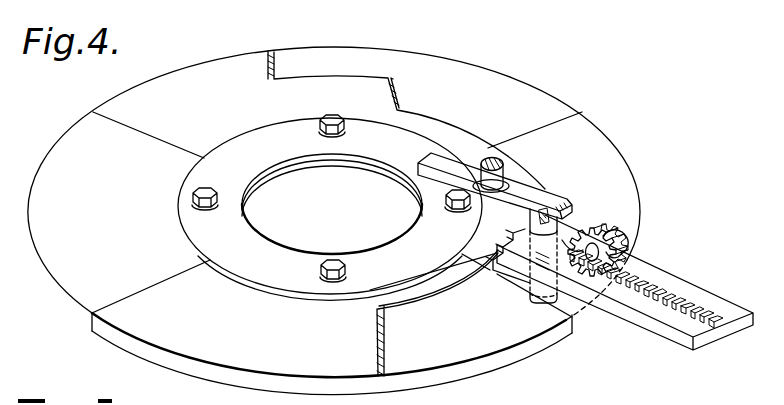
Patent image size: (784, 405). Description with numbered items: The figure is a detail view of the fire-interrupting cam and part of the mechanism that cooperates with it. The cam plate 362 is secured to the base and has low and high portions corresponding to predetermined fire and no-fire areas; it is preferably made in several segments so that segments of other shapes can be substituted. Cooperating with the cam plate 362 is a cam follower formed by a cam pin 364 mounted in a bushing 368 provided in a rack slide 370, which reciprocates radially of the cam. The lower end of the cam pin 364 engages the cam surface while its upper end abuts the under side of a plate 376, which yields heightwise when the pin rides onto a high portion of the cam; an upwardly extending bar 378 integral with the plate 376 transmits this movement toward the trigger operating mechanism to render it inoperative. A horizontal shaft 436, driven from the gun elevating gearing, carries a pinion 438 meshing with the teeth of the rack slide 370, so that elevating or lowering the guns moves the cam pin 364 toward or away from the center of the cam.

The cam plate 362 is at (306, 341).
The cam pin 364 is at (538, 305).
The bushing 368 is at (527, 279).
The rack slide 370 is at (664, 281).
The plate 376 is at (537, 194).
The bar 378 is at (504, 166).
The horizontal shaft 436 is at (624, 236).
The pinion 438 is at (596, 232).